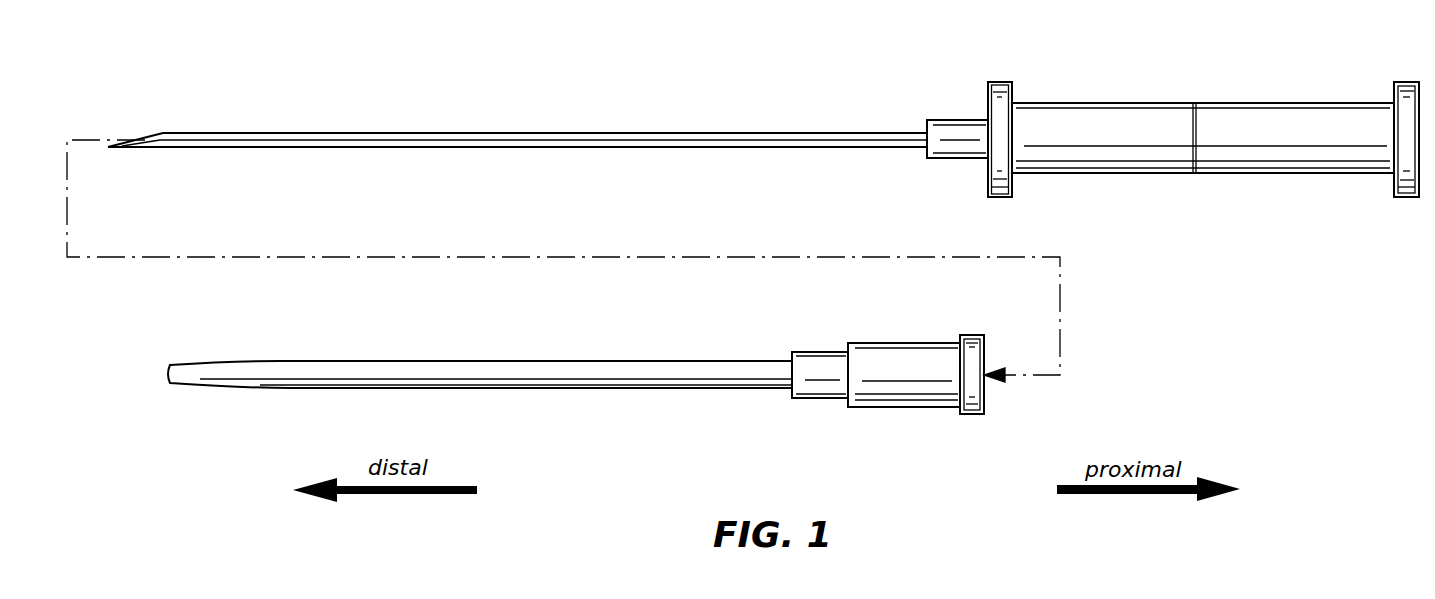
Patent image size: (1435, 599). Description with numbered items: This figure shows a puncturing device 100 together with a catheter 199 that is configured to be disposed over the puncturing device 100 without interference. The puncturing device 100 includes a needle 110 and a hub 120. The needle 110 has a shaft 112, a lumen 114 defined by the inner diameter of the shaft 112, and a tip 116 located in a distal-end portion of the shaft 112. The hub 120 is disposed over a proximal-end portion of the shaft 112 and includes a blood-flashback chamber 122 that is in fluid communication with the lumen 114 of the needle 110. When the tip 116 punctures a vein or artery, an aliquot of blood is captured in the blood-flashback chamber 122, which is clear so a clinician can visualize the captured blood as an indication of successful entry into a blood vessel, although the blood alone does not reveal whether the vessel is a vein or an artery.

The puncturing device 100 is at (1350, 232).
The needle 110 is at (578, 112).
The shaft 112 is at (762, 138).
The lumen 114 is at (410, 140).
The tip 116 is at (140, 130).
The hub 120 is at (1131, 192).
The blood-flashback chamber 122 is at (1109, 128).
The catheter 199 is at (764, 340).